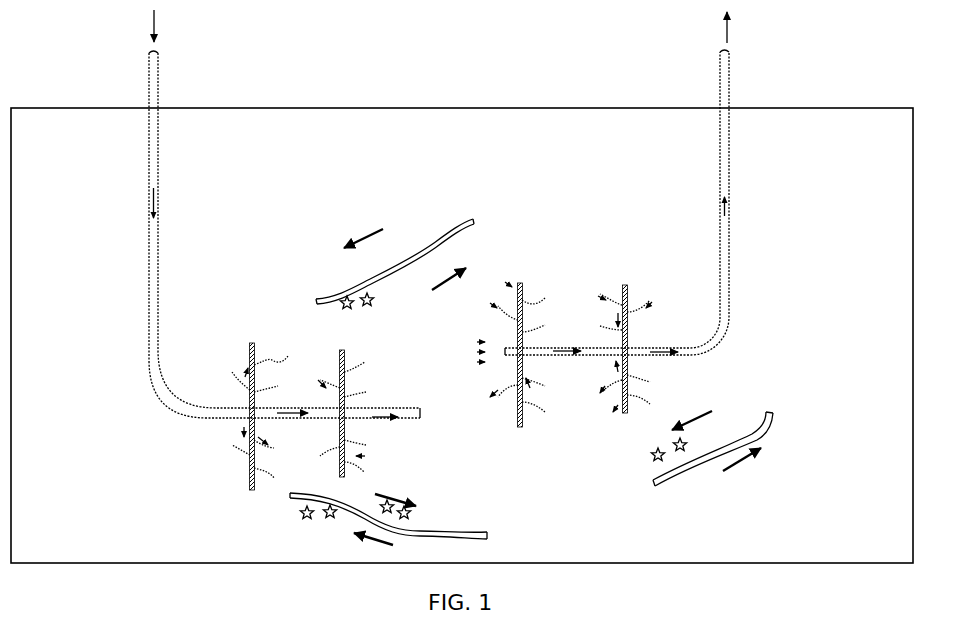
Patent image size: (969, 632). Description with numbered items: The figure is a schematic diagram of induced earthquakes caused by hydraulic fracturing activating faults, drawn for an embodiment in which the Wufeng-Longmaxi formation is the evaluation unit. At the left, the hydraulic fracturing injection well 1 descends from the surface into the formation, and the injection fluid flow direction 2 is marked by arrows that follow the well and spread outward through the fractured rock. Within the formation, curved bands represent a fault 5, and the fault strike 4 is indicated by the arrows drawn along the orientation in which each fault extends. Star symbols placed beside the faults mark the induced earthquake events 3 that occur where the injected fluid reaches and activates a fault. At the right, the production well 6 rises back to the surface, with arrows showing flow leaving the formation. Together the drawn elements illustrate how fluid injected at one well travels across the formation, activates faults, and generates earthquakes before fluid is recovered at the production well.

The hydraulic fracturing injection well 1 is at (172, 64).
The injection fluid flow direction 2 is at (138, 203).
The induced earthquake events 3 is at (325, 316).
The fault strike 4 is at (342, 223).
The fault 5 is at (444, 218).
The production well 6 is at (740, 65).